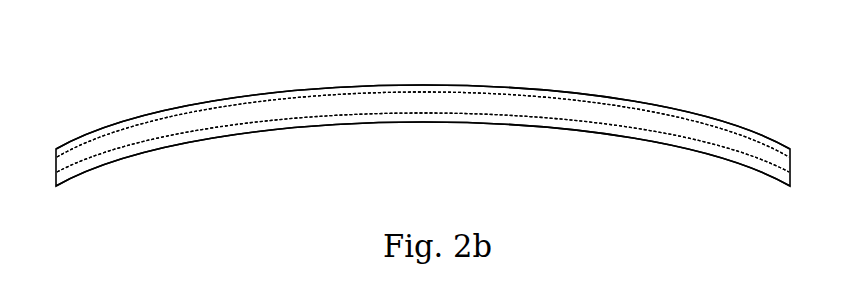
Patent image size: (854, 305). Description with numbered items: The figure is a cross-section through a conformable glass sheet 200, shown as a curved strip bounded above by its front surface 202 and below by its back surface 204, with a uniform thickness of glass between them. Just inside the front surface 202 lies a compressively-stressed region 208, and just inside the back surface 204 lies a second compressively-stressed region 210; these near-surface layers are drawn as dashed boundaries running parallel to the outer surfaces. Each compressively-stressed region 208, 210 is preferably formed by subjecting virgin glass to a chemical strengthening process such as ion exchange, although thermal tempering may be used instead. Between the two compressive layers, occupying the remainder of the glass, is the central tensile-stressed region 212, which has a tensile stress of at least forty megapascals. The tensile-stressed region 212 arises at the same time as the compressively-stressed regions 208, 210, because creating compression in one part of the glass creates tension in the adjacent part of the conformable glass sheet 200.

The conformable glass sheet 200 is at (217, 74).
The front surface 202 is at (395, 87).
The back surface 204 is at (407, 122).
The compressively-stressed region 208 is at (477, 93).
The compressively-stressed region 210 is at (460, 114).
The central tensile-stressed region 212 is at (562, 107).